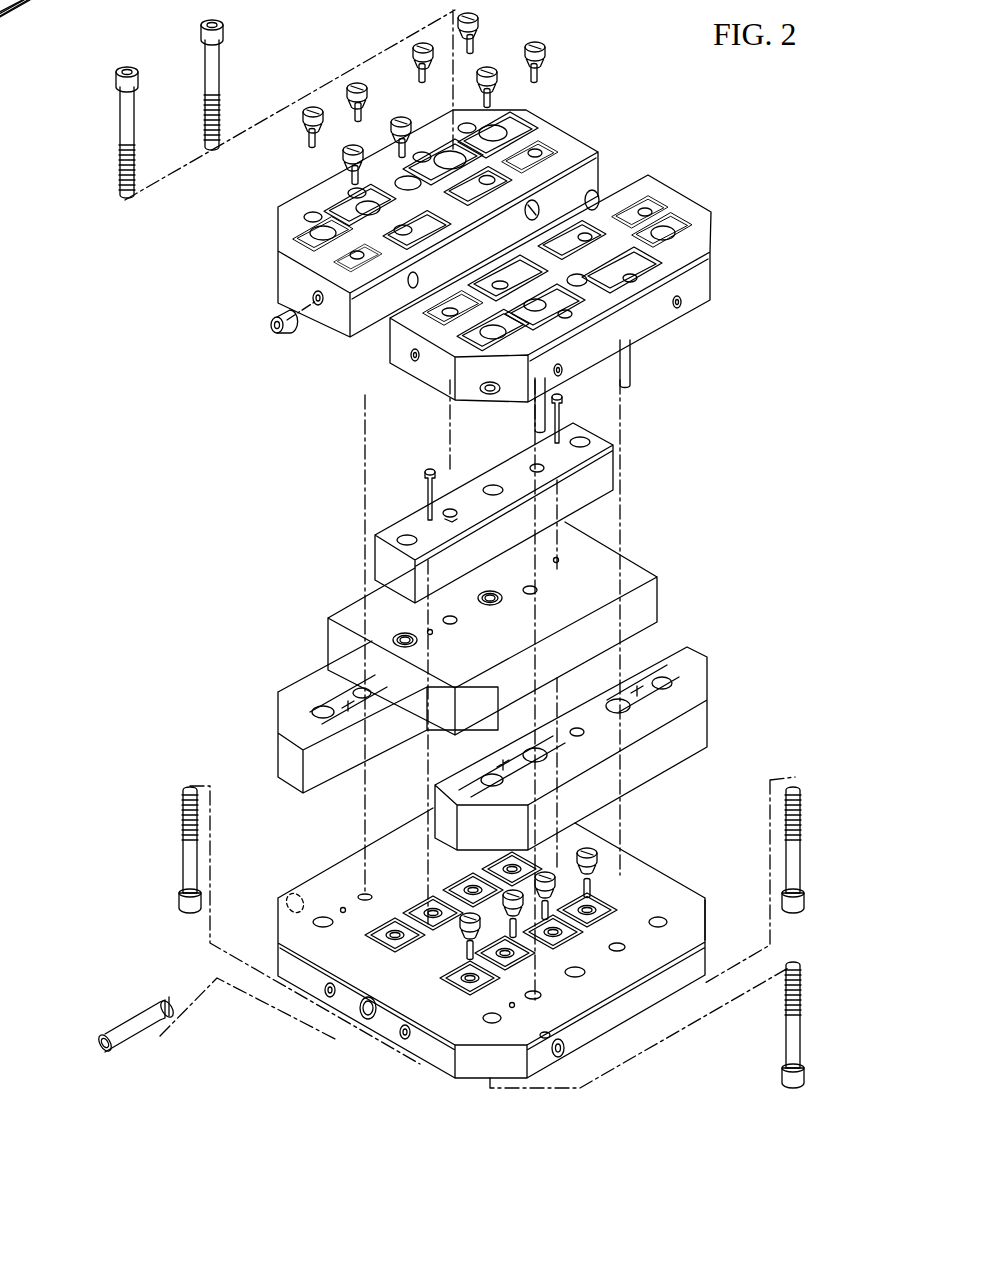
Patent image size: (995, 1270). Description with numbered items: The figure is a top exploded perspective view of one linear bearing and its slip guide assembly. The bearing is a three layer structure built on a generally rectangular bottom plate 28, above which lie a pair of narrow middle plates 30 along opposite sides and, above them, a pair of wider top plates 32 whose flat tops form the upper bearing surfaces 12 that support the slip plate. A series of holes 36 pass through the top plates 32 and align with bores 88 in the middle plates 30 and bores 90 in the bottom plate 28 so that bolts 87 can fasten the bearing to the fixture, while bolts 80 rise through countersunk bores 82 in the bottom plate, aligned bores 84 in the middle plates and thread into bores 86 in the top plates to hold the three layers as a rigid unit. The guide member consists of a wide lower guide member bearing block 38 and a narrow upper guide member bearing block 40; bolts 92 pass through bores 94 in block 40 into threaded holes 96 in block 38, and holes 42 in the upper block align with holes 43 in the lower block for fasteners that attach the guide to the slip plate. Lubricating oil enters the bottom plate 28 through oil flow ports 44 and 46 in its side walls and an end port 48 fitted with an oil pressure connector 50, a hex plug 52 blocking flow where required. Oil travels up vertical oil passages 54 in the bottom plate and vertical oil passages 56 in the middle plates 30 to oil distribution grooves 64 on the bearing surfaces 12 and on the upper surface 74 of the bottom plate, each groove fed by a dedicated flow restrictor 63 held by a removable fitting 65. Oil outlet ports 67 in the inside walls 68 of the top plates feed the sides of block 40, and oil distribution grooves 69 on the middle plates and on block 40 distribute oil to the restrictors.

The upper bearing surface 12 is at (536, 251).
The bottom plate 28 is at (278, 920).
The middle plate 30 is at (709, 724).
The top plate 32 is at (598, 148).
The hole 36 is at (455, 160).
The lower guide member bearing block 38 is at (660, 600).
The upper guide member bearing block 40 is at (615, 468).
The hole 42 is at (586, 440).
The hole 43 is at (500, 598).
The oil flow port 44 is at (565, 1048).
The oil flow port 46 is at (290, 900).
The oil flow port 48 is at (360, 1018).
The oil pressure connector 50 is at (135, 1020).
The hex plug 52 is at (548, 1038).
The vertical oil passage 54 is at (342, 907).
The vertical oil passage 56 is at (330, 700).
The flow restrictor 63 is at (538, 78).
The oil distribution groove 64 is at (542, 145).
The removable fitting 65 is at (356, 82).
The oil outlet port 67 is at (540, 210).
The inside wall 68 is at (598, 200).
The oil distribution groove 69 is at (460, 510).
The upper surface 74 is at (708, 920).
The bolt 80 is at (185, 865).
The countersunk bore 82 is at (667, 922).
The bore 84 is at (664, 678).
The bore 86 is at (670, 236).
The bolt 87 is at (125, 67).
The bore 88 is at (584, 733).
The bore 90 is at (626, 947).
The bolt 92 is at (562, 422).
The bore 94 is at (545, 470).
The threaded hole 96 is at (556, 557).